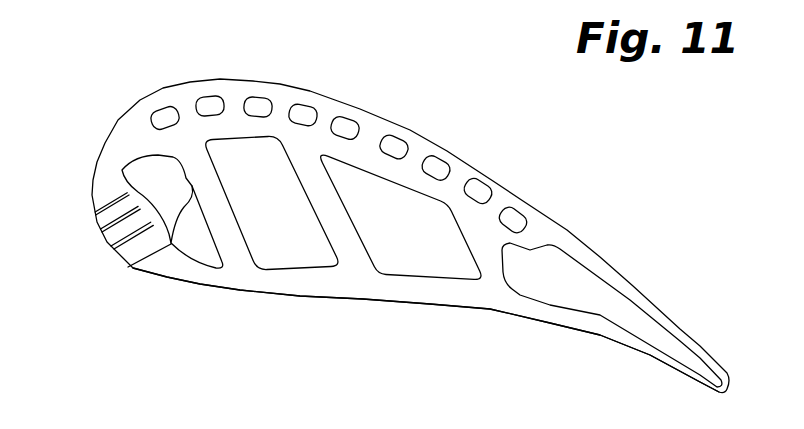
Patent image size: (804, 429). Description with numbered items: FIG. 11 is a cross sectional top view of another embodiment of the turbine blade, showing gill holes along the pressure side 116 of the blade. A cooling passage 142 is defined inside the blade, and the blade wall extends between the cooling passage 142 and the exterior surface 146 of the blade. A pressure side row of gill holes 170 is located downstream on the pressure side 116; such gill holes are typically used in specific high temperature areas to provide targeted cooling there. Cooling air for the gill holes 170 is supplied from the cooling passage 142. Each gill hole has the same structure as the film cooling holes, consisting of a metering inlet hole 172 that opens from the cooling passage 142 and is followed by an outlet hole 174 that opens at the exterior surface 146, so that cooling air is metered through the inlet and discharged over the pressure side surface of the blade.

The pressure side 116 is at (167, 277).
The cooling passage 142 is at (139, 176).
The exterior surface 146 is at (240, 293).
The pressure side row of gill holes 170 is at (134, 262).
The metering inlet hole 172 is at (200, 190).
The outlet hole 174 is at (125, 268).